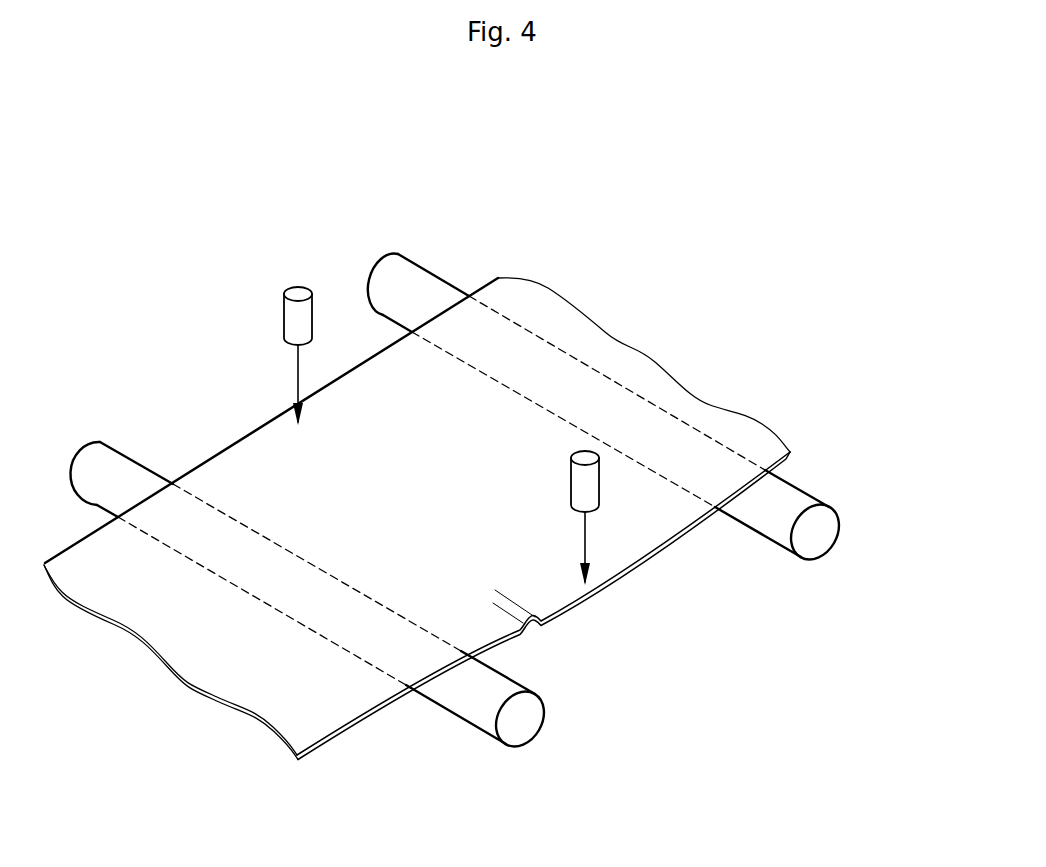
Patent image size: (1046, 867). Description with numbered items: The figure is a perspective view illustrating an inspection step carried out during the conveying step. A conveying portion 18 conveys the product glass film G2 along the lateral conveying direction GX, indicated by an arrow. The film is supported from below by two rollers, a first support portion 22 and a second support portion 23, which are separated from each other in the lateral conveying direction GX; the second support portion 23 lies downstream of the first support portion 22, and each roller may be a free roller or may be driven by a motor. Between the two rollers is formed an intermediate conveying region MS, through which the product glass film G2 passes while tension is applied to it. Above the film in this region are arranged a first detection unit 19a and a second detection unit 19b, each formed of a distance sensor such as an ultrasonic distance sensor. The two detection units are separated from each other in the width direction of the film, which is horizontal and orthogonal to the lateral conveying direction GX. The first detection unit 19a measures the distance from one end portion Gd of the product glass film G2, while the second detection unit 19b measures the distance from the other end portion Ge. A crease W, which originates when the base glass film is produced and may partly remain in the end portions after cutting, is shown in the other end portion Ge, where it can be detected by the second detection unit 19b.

The conveying portion 18 is at (530, 170).
The first detection unit 19a is at (283, 321).
The second detection unit 19b is at (571, 482).
The first support portion 22 is at (463, 702).
The second support portion 23 is at (763, 517).
The product glass film G2 is at (417, 519).
The one end portion Gd is at (276, 431).
The other end portion Ge is at (561, 598).
The crease W is at (541, 640).
The intermediate conveying region MS is at (848, 552).
The lateral conveying direction GX is at (263, 242).